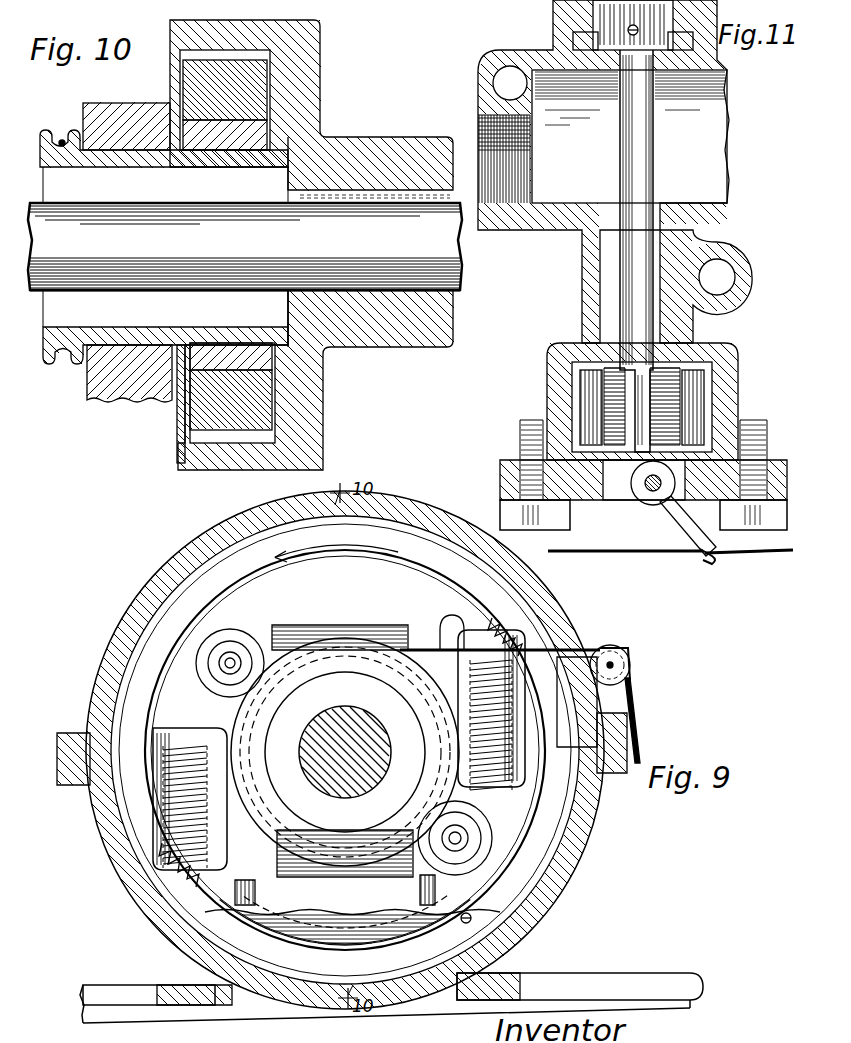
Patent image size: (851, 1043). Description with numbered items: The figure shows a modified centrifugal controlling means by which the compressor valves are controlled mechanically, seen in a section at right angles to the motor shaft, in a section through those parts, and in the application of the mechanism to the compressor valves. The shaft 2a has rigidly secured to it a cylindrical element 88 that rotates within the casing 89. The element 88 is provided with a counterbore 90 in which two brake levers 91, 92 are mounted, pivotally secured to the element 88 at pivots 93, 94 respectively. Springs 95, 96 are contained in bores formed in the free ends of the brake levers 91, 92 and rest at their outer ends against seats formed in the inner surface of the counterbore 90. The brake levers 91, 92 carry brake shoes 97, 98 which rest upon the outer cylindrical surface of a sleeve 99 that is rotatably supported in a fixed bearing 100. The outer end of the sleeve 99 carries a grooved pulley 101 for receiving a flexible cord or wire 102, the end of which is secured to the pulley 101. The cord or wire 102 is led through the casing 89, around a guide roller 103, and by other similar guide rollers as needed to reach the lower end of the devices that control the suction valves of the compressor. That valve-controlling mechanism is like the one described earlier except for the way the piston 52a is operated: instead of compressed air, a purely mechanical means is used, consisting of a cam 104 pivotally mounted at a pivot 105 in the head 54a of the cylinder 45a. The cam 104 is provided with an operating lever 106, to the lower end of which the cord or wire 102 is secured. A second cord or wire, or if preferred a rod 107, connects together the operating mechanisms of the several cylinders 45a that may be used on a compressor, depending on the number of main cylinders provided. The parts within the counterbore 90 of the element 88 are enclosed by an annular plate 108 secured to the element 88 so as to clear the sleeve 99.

In FIG. 10, the shaft 2a is at (333, 228).
In FIG. 10, the cylindrical element 88 is at (320, 75).
In FIG. 9, the cylindrical element 88 is at (145, 680).
In FIG. 9, the casing 89 is at (183, 553).
In FIG. 10, the counterbore 90 is at (218, 438).
In FIG. 10, the brake lever 91 is at (245, 75).
In FIG. 9, the brake lever 91 is at (302, 588).
In FIG. 10, the brake lever 92 is at (210, 393).
In FIG. 9, the brake lever 92 is at (428, 882).
In FIG. 9, the pivot 93 is at (228, 660).
In FIG. 9, the pivot 94 is at (457, 838).
In FIG. 9, the spring 95 is at (525, 638).
In FIG. 9, the spring 96 is at (168, 865).
In FIG. 10, the brake shoe 97 is at (245, 142).
In FIG. 9, the brake shoe 97 is at (388, 630).
In FIG. 10, the brake shoe 98 is at (232, 350).
In FIG. 9, the brake shoe 98 is at (205, 915).
In FIG. 10, the sleeve 99 is at (290, 152).
In FIG. 9, the sleeve 99 is at (392, 670).
In FIG. 10, the fixed bearing 100 is at (125, 115).
In FIG. 10, the grooved pulley 101 is at (78, 362).
In FIG. 10, the cord or wire 102 is at (62, 140).
In FIG. 11, the cord or wire 102 is at (648, 555).
In FIG. 9, the cord or wire 102 is at (640, 698).
In FIG. 9, the guide roller 103 is at (614, 663).
In FIG. 11, the cam 104 is at (640, 498).
In FIG. 11, the pivot 105 is at (653, 492).
In FIG. 11, the operating lever 106 is at (688, 528).
In FIG. 11, the rod 107 is at (762, 556).
In FIG. 10, the annular plate 108 is at (181, 415).
In FIG. 9, the annular plate 108 is at (330, 955).
In FIG. 11, the cylinder 45a is at (728, 395).
In FIG. 11, the piston 52a is at (590, 392).
In FIG. 11, the head 54a is at (512, 470).